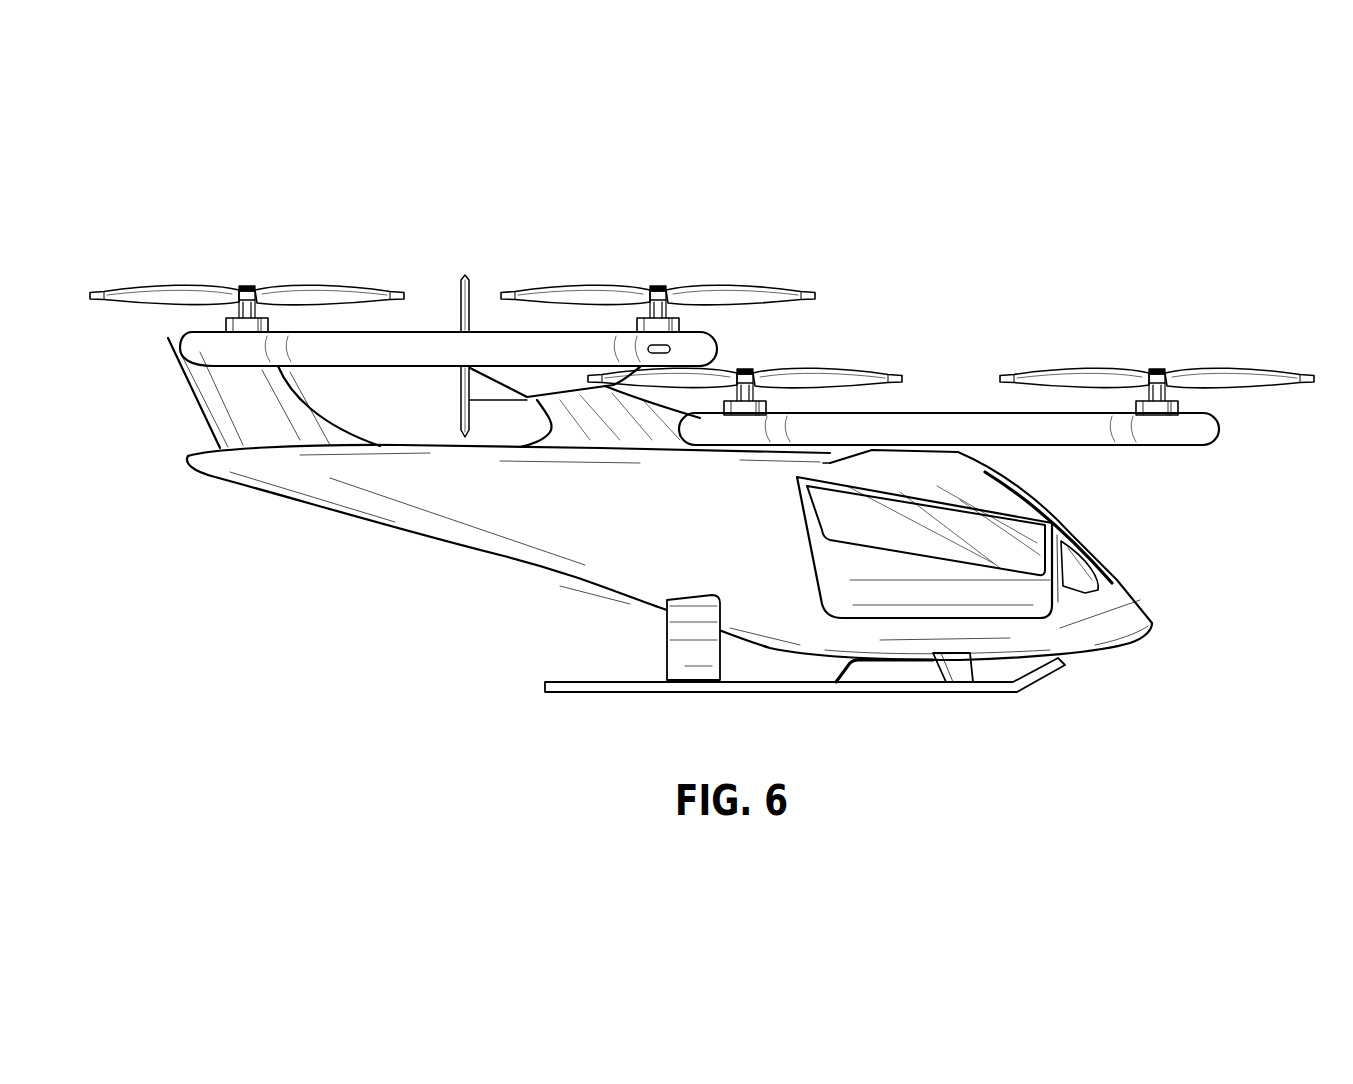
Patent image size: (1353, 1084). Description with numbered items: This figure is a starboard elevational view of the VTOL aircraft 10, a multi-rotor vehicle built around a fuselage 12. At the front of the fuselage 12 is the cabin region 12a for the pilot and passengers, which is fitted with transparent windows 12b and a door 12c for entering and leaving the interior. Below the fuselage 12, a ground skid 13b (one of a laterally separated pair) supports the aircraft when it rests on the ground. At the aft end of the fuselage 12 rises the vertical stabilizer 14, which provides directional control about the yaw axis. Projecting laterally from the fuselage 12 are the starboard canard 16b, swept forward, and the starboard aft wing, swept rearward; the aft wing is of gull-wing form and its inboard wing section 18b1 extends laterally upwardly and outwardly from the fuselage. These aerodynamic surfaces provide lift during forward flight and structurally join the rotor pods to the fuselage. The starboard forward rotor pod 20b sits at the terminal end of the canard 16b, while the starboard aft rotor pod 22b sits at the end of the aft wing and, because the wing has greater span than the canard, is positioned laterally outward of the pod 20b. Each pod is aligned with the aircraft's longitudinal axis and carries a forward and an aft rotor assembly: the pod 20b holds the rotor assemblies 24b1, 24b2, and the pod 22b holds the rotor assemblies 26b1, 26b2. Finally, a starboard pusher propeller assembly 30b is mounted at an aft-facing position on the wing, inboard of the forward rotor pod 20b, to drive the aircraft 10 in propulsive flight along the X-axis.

The VTOL aircraft 10 is at (910, 250).
The fuselage 12 is at (556, 510).
The forward cabin region 12a is at (1063, 532).
The transparent windows 12b is at (996, 535).
The door 12c is at (883, 574).
The ground skid 13b is at (913, 685).
The vertical stabilizer 14 is at (266, 407).
The starboard canard 16b is at (893, 463).
The inboard wing section 18b1 is at (608, 422).
The starboard forward rotor pod 20b is at (938, 438).
The starboard aft rotor pod 22b is at (468, 357).
The forward side rotor assembly 24b1 is at (1180, 384).
The aft side rotor assembly 24b2 is at (770, 385).
The forward side rotor assembly 26b1 is at (680, 302).
The aft side rotor assembly 26b2 is at (262, 307).
The starboard pusher propeller assembly 30b is at (489, 398).